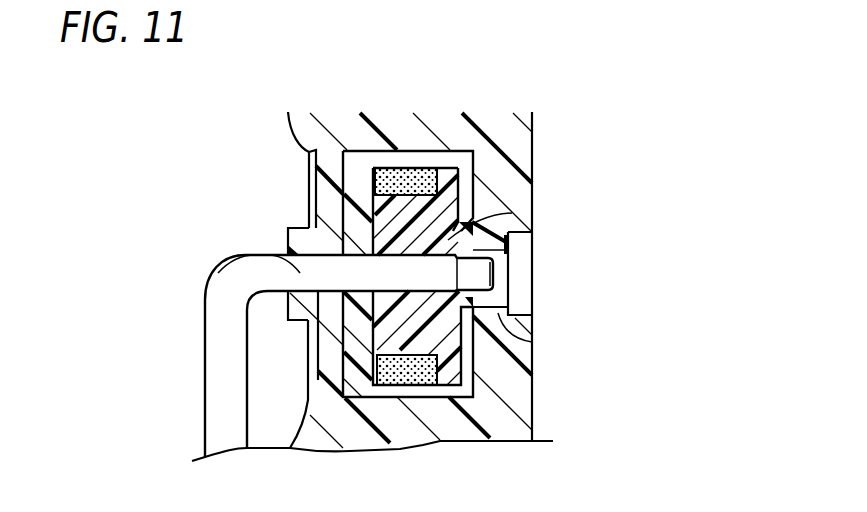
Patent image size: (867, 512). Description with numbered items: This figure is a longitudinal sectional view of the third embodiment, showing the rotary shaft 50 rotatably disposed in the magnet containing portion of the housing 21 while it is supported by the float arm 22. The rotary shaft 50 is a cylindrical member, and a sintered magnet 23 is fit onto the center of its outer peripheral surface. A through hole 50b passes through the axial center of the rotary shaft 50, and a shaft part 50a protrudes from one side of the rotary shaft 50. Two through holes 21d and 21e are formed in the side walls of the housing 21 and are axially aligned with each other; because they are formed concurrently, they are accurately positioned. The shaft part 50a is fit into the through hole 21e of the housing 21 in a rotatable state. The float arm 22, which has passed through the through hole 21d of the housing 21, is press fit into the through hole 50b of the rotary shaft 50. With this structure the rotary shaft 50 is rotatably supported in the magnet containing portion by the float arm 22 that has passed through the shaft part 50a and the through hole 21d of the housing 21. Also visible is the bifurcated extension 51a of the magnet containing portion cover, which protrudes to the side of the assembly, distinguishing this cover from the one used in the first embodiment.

The housing 21 is at (548, 165).
The through hole 21d is at (216, 272).
The through hole 21e is at (532, 277).
The float arm 22 is at (204, 408).
The sintered magnet 23 is at (421, 178).
The rotary shaft 50 is at (476, 354).
The shaft part 50a is at (508, 345).
The through hole 50b is at (512, 213).
The bifurcated extension 51a is at (308, 207).